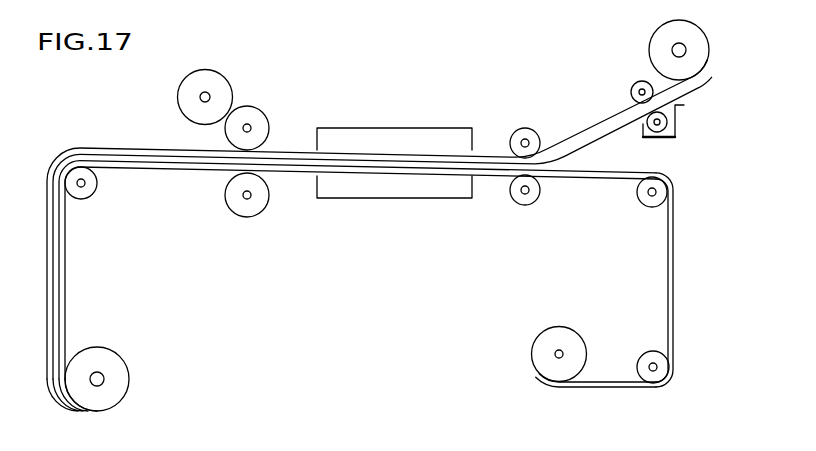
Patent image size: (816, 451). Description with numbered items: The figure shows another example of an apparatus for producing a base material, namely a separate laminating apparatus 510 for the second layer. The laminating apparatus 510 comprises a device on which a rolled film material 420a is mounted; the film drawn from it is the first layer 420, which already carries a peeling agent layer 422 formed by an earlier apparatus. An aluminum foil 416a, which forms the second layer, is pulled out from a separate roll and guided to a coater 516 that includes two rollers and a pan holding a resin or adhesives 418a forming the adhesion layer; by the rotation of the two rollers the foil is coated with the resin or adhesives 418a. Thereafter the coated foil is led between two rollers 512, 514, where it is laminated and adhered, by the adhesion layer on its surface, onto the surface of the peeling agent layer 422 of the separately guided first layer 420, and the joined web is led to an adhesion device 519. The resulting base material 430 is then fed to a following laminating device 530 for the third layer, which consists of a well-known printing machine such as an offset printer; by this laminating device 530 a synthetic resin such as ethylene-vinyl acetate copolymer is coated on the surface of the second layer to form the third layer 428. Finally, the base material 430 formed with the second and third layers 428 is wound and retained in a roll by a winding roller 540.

The third layer 428 is at (137, 148).
The base material 430 is at (280, 153).
The laminating device 530 is at (238, 101).
The adhesion device 519 is at (390, 198).
The roller 512 is at (523, 141).
The roller 514 is at (526, 203).
The aluminum foil 416a is at (586, 130).
The resin or adhesives 418a is at (584, 147).
The coater 516 is at (676, 138).
The laminating apparatus 510 is at (631, 305).
The first layer 420 is at (611, 380).
The peeling agent layer 422 is at (600, 388).
The rolled film material 420a is at (552, 338).
The winding roller 540 is at (102, 372).